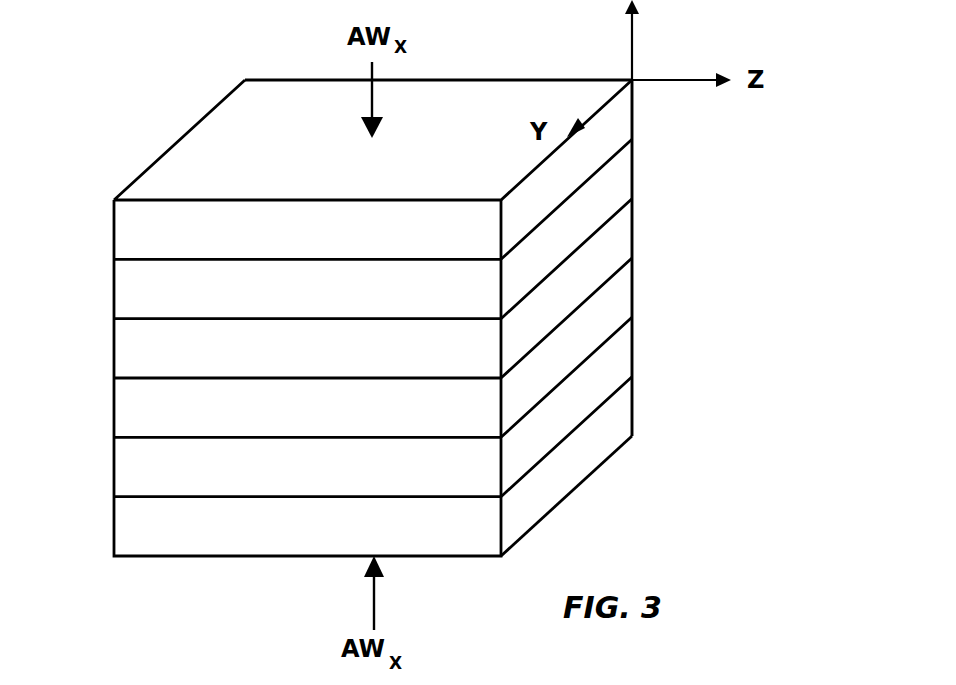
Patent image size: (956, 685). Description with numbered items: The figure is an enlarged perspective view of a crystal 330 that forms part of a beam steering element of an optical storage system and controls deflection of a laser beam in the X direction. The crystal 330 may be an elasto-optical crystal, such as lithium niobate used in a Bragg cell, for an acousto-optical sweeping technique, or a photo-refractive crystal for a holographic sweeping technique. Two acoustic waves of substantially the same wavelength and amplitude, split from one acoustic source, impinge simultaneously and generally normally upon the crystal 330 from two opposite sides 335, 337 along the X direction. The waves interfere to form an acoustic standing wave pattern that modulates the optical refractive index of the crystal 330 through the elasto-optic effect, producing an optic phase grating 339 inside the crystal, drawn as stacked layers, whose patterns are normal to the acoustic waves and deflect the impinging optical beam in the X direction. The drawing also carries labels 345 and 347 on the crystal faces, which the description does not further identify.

The crystal 330 is at (163, 101).
The side 335 is at (173, 172).
The side 337 is at (607, 437).
The optic phase grating 339 is at (615, 332).
The front face / layer 345 is at (125, 347).
The top edge 347 is at (475, 79).